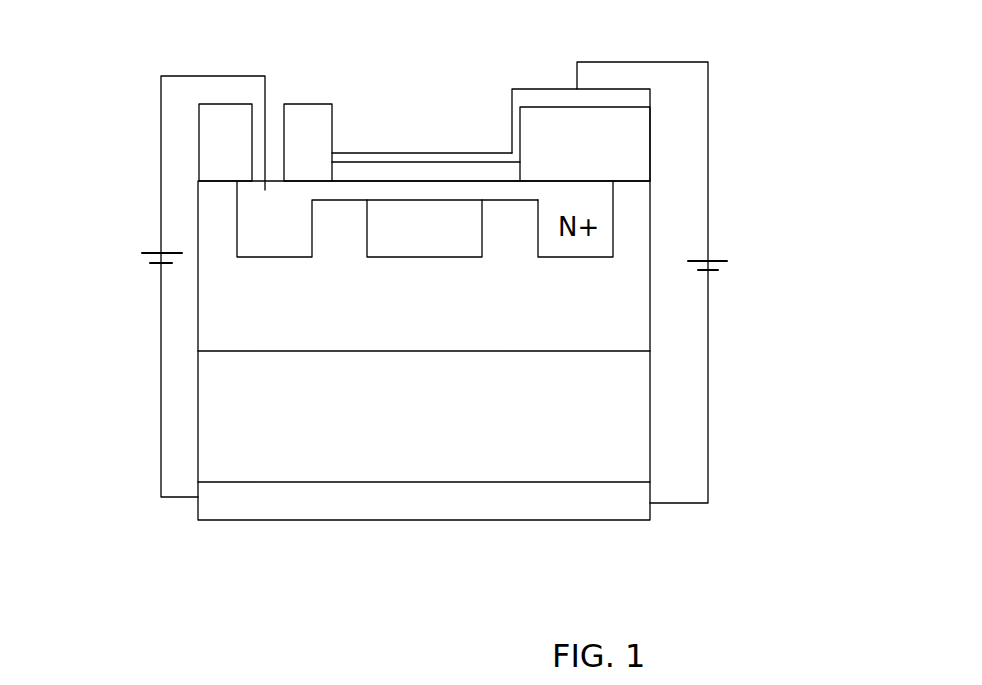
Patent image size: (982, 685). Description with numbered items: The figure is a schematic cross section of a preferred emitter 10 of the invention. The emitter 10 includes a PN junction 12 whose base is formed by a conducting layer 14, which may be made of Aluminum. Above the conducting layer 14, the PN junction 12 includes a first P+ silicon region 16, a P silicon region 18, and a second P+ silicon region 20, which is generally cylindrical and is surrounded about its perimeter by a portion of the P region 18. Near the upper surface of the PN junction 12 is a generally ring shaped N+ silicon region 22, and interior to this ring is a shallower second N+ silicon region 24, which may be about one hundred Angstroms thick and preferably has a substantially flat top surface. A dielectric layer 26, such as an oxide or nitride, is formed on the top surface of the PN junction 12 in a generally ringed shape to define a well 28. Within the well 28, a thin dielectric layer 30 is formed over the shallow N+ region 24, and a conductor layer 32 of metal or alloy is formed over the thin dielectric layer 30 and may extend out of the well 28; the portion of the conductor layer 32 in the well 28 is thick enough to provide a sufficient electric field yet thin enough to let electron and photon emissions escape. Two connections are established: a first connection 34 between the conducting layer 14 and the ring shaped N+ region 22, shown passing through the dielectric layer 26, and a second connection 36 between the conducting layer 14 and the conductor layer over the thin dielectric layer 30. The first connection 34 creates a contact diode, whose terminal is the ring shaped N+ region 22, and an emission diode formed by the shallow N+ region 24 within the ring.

The emitter 10 is at (745, 89).
The PN junction 12 is at (499, 253).
The conducting layer 14 is at (488, 500).
The first P+ silicon region 16 is at (348, 462).
The P silicon region 18 is at (632, 340).
The second P+ silicon region 20 is at (387, 248).
The ring shaped N+ silicon region 22 is at (250, 208).
The shallow N+ silicon region 24 is at (407, 190).
The dielectric layer 26 is at (218, 152).
The well 28 is at (383, 134).
The thin dielectric layer 30 is at (472, 170).
The conductor layer 32 is at (432, 153).
The first connection 34 is at (161, 93).
The second connection 36 is at (708, 230).